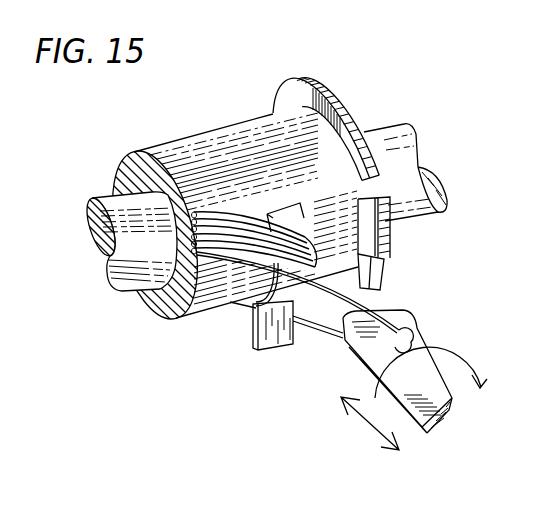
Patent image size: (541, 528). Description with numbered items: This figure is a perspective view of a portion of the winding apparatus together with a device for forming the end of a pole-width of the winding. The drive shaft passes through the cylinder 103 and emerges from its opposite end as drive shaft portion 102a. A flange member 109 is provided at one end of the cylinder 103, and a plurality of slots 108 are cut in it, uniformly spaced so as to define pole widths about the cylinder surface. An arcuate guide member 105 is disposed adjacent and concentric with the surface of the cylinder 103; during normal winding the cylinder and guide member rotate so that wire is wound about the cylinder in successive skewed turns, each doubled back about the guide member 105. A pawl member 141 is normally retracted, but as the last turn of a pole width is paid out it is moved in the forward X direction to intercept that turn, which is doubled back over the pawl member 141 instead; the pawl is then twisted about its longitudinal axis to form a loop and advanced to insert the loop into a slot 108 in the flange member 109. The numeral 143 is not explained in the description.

The drive shaft portion 102a is at (411, 168).
The cylinder 103 is at (183, 142).
The guide member 105 is at (258, 322).
The slot 108 is at (381, 186).
The flange member 109 is at (288, 95).
The pawl member 141 is at (402, 347).
The stop 143 is at (466, 527).